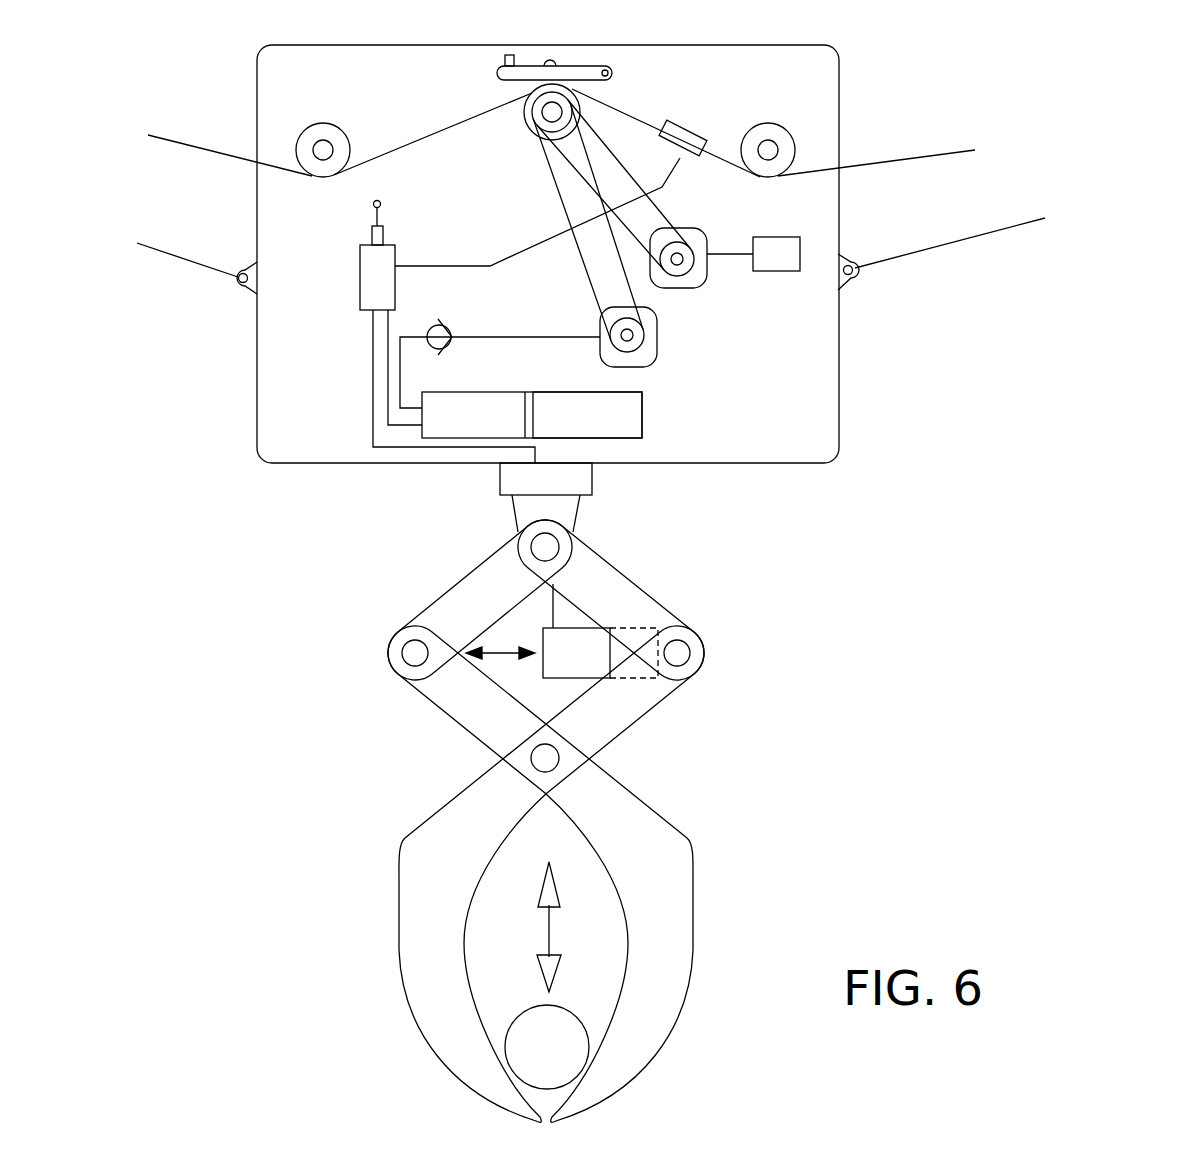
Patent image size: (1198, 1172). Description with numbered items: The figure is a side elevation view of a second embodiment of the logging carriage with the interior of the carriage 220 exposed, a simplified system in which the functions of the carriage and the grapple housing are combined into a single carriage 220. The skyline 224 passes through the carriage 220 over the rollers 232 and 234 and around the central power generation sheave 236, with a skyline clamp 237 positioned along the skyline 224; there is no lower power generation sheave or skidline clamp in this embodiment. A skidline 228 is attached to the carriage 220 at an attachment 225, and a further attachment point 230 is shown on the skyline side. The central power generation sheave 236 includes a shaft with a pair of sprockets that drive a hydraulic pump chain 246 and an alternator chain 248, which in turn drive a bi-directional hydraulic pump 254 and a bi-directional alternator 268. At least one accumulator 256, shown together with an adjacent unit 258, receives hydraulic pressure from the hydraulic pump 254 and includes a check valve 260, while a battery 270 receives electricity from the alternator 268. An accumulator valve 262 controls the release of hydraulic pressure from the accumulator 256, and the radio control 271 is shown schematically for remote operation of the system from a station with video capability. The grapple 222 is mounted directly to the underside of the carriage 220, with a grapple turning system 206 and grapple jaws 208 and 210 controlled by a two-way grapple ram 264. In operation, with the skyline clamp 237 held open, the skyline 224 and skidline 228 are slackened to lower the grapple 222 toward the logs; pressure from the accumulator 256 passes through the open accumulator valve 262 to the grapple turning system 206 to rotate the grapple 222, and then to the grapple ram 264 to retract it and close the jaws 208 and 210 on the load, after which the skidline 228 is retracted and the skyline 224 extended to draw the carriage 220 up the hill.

The grapple turning system 206 is at (505, 480).
The grapple jaw 208 is at (693, 940).
The grapple jaw 210 is at (405, 915).
The carriage 220 is at (860, 87).
The grapple 222 is at (718, 830).
The skyline 224 is at (185, 143).
The attachment eyelet 225 is at (238, 290).
The skidline 228 is at (941, 261).
The sensor bar 230 is at (490, 77).
The roller 232 is at (772, 123).
The roller 234 is at (320, 123).
The central power generation sheave 236 is at (528, 113).
The skyline clamp 237 is at (689, 125).
The hydraulic pump chain 246 is at (626, 168).
The alternator chain 248 is at (551, 180).
The bi-directional hydraulic pump 254 is at (600, 325).
The accumulator 256 is at (562, 392).
The pump 258 is at (525, 418).
The check valve 260 is at (452, 345).
The accumulator valve 262 is at (360, 273).
The two-way grapple ram 264 is at (609, 666).
The bi-directional alternator 268 is at (691, 228).
The battery 270 is at (783, 237).
The radio control 271 is at (370, 238).